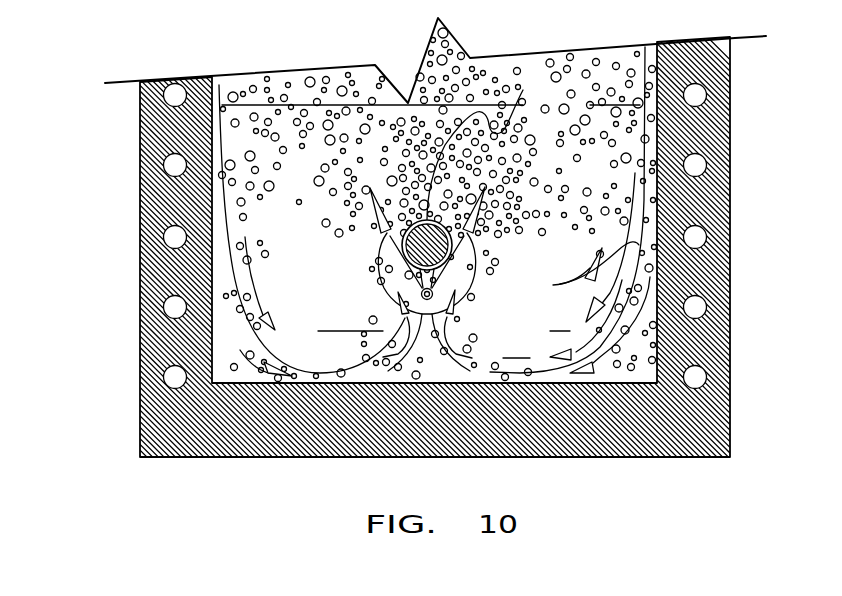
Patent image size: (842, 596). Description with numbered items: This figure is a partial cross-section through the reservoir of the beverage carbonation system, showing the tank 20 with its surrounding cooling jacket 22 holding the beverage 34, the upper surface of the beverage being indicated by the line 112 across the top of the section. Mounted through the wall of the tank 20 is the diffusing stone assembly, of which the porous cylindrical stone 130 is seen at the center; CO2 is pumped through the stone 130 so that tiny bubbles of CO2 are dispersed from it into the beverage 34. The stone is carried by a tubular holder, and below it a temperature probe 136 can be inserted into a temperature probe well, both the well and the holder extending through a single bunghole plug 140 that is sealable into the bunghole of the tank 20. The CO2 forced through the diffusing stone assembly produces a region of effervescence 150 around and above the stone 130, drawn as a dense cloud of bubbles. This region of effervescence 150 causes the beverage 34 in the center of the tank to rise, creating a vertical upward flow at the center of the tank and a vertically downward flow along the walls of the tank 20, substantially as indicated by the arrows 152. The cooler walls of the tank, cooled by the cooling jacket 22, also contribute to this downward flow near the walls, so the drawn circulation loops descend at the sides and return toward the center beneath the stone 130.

The tank 20 is at (140, 272).
The cooling jacket 22 is at (163, 163).
The beverage 34 is at (433, 331).
The melt surface 112 is at (435, 51).
The porous cylindrical stone 130 is at (383, 240).
The temperature probe 136 is at (403, 294).
The bunghole plug 140 is at (383, 265).
The region of effervescence 150 is at (523, 90).
The arrows 152 is at (455, 285).